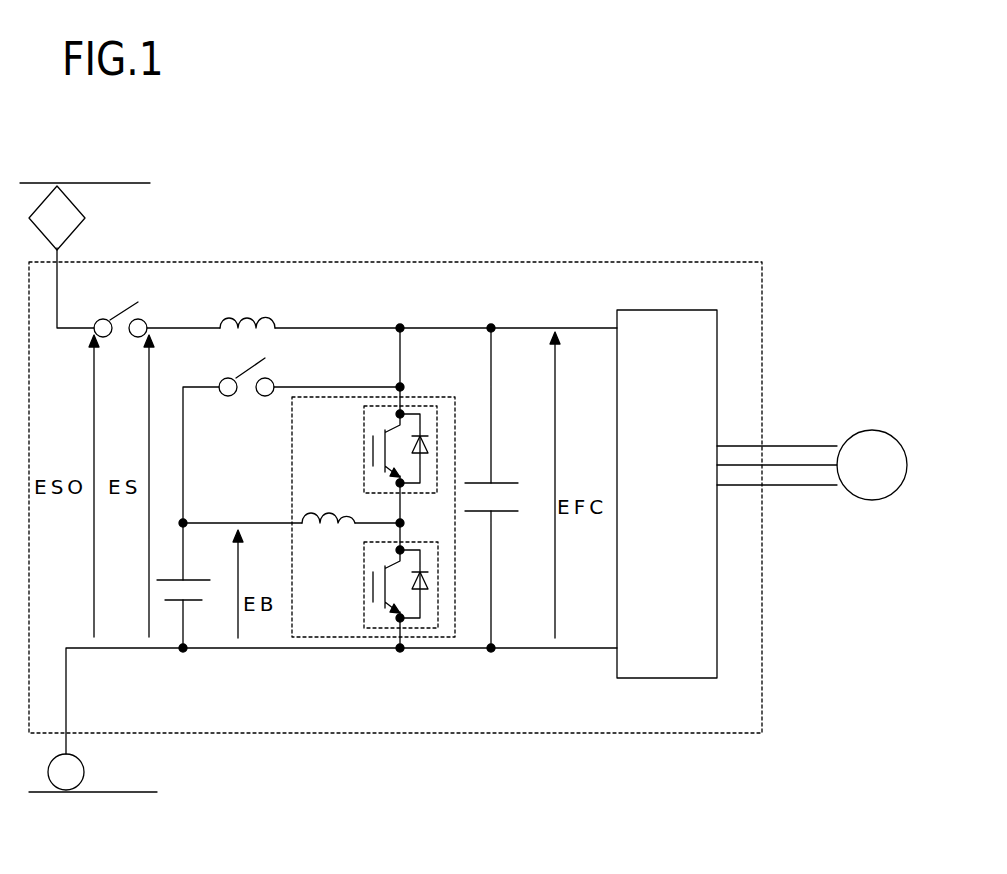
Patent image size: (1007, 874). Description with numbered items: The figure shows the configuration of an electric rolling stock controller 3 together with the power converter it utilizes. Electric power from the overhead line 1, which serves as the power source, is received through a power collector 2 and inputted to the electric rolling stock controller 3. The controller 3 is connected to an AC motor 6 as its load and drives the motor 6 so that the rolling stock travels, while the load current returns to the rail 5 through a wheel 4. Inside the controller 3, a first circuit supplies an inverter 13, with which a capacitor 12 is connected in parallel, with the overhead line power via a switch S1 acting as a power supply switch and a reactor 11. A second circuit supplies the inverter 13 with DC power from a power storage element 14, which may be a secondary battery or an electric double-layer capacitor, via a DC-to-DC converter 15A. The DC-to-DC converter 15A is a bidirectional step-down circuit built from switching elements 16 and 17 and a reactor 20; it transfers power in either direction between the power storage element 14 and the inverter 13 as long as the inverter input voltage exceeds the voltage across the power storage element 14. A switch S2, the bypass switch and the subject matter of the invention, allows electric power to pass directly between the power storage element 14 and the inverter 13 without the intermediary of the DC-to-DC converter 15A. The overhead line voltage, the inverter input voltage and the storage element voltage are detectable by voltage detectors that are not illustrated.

The overhead line 1 is at (104, 182).
The power collector 2 is at (75, 233).
The electric rolling stock controller 3 is at (371, 262).
The power supply switch S1 is at (121, 308).
The bypass switch S2 is at (252, 392).
The reactor 11 is at (240, 310).
The capacitor 12 is at (510, 483).
The inverter 13 is at (645, 308).
The power storage element 14 is at (205, 580).
The DC-to-DC converter 15A is at (325, 396).
The switching element 16 is at (418, 410).
The switching element 17 is at (432, 543).
The reactor 20 is at (312, 506).
The motor 6 is at (866, 430).
The wheel 4 is at (84, 768).
The rail 5 is at (137, 793).